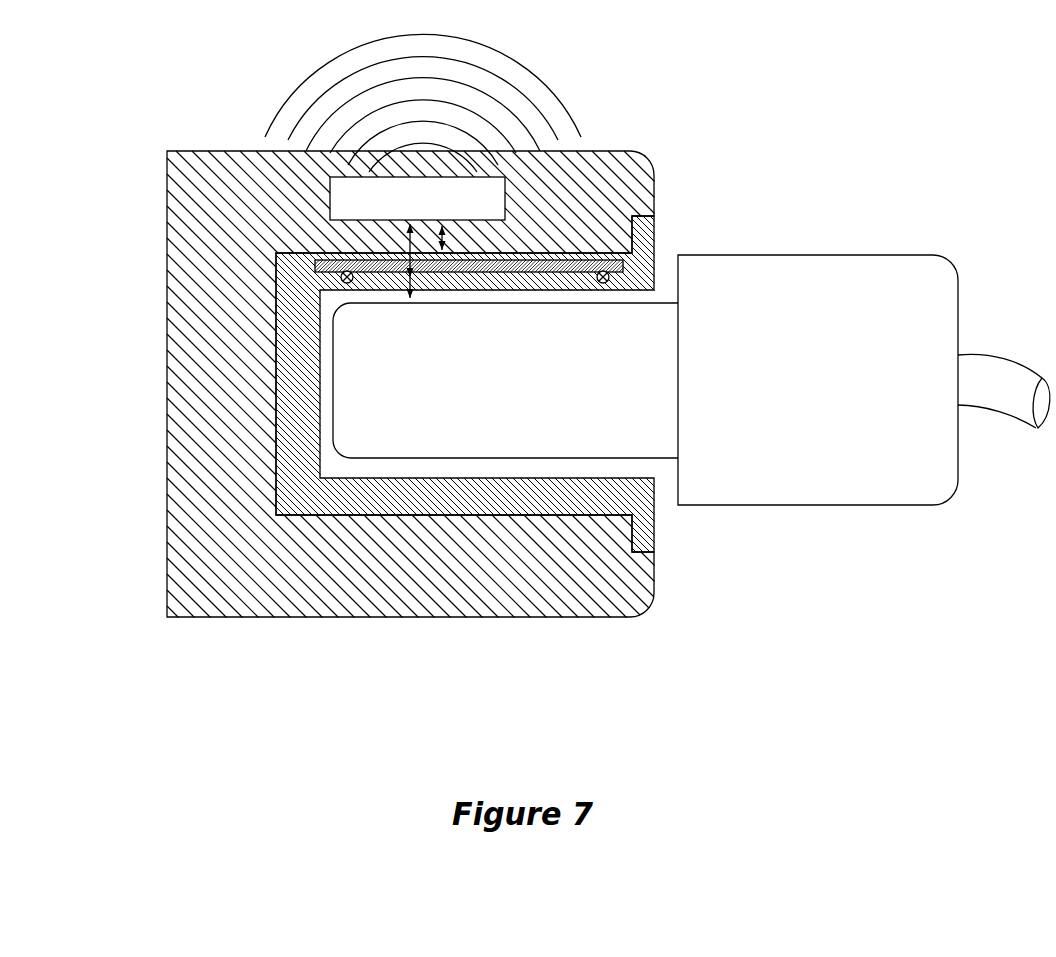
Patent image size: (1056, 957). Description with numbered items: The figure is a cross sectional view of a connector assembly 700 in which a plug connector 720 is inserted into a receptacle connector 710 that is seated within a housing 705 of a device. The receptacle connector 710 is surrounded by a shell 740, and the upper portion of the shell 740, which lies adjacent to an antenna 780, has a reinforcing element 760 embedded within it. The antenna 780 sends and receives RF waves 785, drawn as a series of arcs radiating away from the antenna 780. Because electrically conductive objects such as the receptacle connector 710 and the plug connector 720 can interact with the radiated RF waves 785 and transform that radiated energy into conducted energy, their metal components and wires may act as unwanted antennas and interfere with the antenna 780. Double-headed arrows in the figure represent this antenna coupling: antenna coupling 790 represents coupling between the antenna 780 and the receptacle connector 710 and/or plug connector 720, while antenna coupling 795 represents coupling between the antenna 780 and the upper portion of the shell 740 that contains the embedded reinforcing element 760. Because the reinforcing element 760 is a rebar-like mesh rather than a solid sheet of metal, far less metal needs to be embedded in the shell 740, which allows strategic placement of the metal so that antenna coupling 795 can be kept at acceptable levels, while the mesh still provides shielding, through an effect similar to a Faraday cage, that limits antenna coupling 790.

The sensor assembly 700 is at (640, 100).
The housing 705 is at (560, 617).
The receptacle connector 710 is at (661, 242).
The plug connector 720 is at (791, 233).
The shell 740 is at (458, 493).
The reinforcing element 760 is at (603, 270).
The antenna 780 is at (330, 203).
The RF waves 785 is at (530, 60).
The antenna coupling 790 is at (418, 245).
The antenna coupling 795 is at (445, 240).